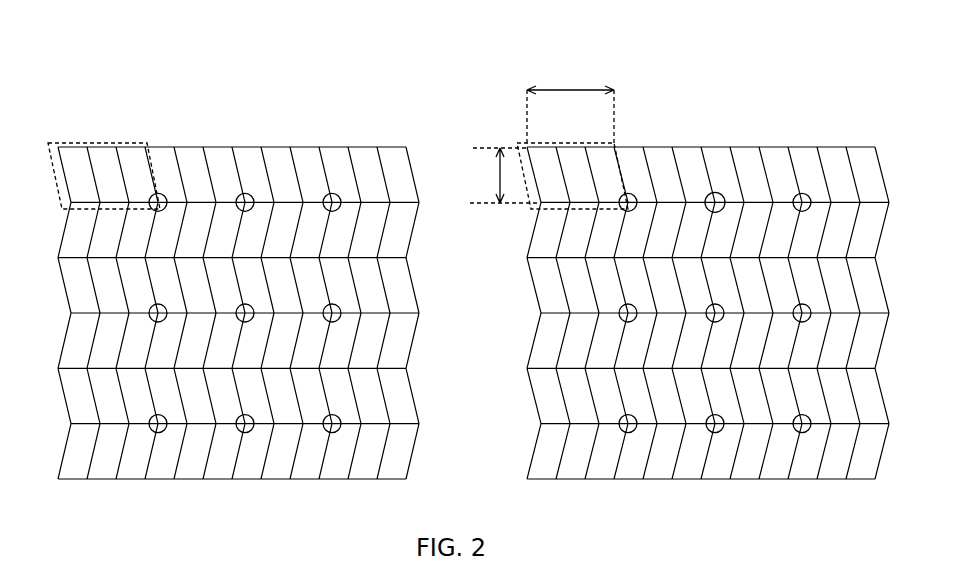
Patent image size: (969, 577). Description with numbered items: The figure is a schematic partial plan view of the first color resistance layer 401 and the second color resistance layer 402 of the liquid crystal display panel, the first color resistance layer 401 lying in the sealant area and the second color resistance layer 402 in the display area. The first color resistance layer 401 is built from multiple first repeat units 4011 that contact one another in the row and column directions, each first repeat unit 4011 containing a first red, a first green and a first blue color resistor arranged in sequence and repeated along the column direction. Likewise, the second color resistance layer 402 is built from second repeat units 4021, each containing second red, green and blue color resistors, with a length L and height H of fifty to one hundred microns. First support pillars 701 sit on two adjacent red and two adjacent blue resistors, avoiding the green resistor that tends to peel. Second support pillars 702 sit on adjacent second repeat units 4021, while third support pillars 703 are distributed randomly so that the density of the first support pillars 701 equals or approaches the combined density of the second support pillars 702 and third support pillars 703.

The first color resistance layer 401 is at (230, 112).
The second color resistance layer 402 is at (702, 85).
The first repeat unit 4011 is at (63, 143).
The second repeat unit 4021 is at (548, 143).
The first support pillar 701 is at (148, 312).
The second support pillar 702 is at (623, 312).
The third support pillar 703 is at (719, 198).